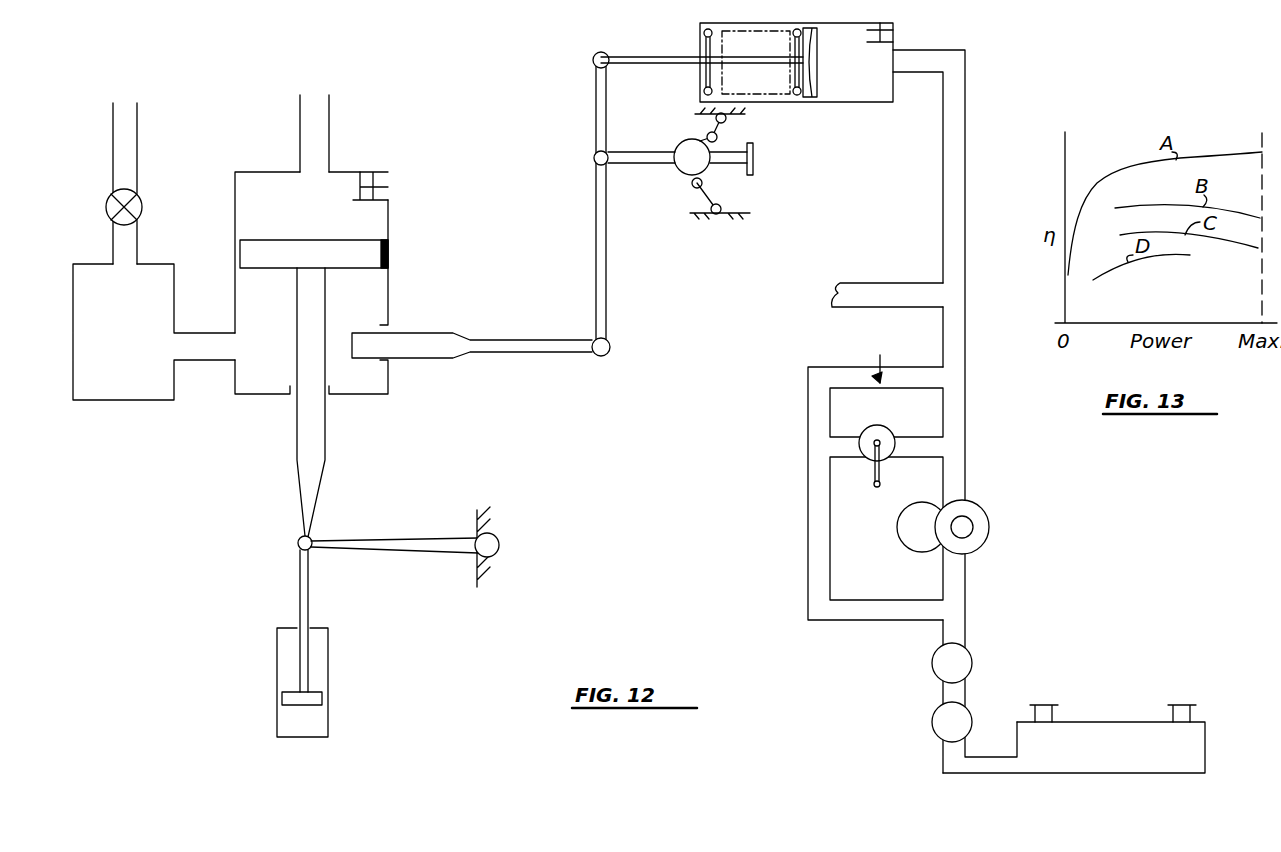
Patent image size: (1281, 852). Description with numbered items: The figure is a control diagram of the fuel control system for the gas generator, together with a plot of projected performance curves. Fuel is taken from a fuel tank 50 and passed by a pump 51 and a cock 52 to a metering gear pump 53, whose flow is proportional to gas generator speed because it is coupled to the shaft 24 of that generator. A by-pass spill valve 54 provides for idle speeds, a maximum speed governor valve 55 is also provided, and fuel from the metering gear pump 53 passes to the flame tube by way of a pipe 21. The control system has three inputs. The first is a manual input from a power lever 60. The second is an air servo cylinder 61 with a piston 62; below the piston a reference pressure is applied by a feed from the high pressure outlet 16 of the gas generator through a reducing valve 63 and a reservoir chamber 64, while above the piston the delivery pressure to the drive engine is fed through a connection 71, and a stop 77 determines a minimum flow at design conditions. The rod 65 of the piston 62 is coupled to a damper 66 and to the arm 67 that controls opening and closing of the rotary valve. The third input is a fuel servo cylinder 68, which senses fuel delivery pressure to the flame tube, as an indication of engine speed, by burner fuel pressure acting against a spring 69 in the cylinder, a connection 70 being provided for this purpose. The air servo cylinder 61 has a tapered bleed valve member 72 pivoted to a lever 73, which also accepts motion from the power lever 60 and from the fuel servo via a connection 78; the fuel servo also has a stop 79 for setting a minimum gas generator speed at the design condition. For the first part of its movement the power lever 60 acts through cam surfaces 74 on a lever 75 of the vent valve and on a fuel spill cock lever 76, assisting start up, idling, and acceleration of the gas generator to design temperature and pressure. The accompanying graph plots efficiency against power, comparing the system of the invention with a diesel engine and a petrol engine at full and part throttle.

The high pressure outlet 16 is at (132, 137).
The reducing valve 63 is at (140, 200).
The reservoir chamber 64 is at (132, 375).
The connection 71 is at (329, 133).
The stop 77 is at (388, 187).
The piston 62 is at (365, 255).
The air servo cylinder 61 is at (388, 380).
The tapered bleed valve member 72 is at (430, 340).
The rod 65 is at (313, 435).
The arm 67 is at (405, 540).
The damper 66 is at (328, 656).
The lever 73 is at (596, 305).
The connection 78 is at (648, 65).
The spring 69 is at (703, 43).
The fuel servo cylinder 68 is at (850, 102).
The stop 79 is at (893, 32).
The connection 70 is at (942, 192).
The cam surfaces 74 is at (676, 150).
The lever 75 is at (724, 130).
The power lever 60 is at (642, 172).
The fuel spill cock lever 76 is at (874, 473).
The pipe 21 is at (893, 288).
The maximum speed governor valve 55 is at (875, 475).
The by-pass spill valve 54 is at (895, 432).
The shaft 24 is at (966, 520).
The metering gear pump 53 is at (972, 545).
The cock 52 is at (935, 665).
The pump 51 is at (935, 722).
The fuel tank 50 is at (1095, 722).